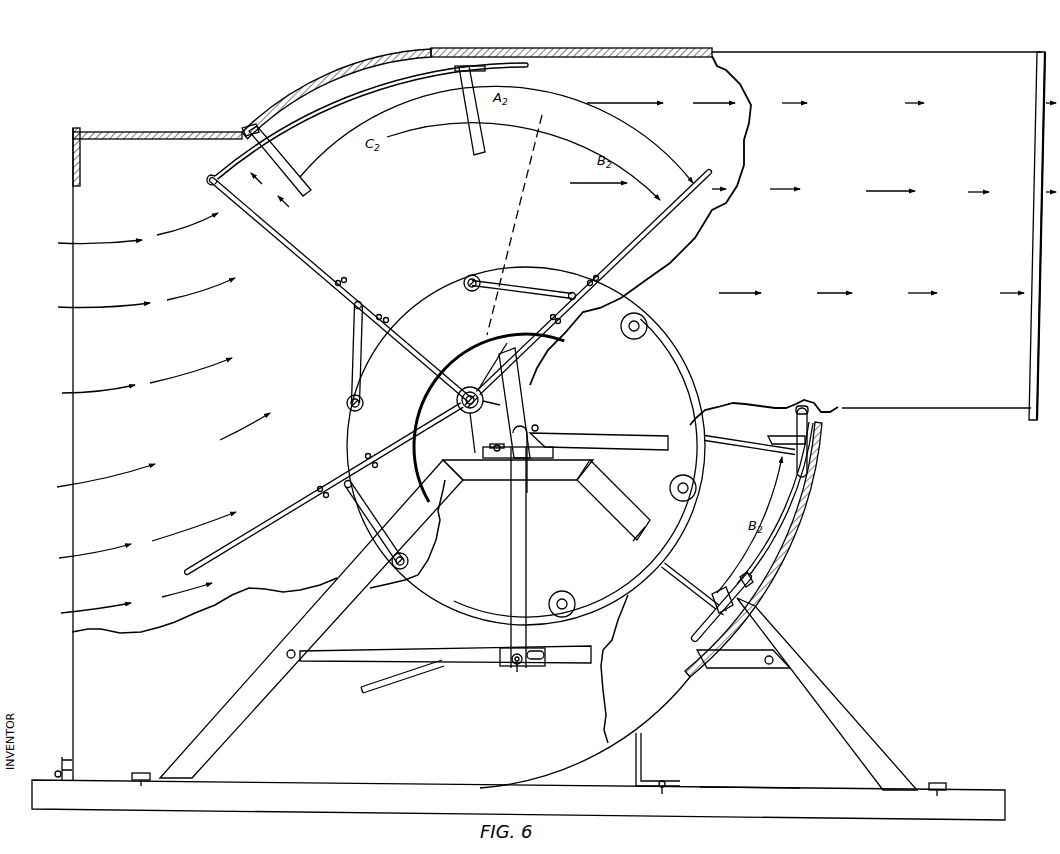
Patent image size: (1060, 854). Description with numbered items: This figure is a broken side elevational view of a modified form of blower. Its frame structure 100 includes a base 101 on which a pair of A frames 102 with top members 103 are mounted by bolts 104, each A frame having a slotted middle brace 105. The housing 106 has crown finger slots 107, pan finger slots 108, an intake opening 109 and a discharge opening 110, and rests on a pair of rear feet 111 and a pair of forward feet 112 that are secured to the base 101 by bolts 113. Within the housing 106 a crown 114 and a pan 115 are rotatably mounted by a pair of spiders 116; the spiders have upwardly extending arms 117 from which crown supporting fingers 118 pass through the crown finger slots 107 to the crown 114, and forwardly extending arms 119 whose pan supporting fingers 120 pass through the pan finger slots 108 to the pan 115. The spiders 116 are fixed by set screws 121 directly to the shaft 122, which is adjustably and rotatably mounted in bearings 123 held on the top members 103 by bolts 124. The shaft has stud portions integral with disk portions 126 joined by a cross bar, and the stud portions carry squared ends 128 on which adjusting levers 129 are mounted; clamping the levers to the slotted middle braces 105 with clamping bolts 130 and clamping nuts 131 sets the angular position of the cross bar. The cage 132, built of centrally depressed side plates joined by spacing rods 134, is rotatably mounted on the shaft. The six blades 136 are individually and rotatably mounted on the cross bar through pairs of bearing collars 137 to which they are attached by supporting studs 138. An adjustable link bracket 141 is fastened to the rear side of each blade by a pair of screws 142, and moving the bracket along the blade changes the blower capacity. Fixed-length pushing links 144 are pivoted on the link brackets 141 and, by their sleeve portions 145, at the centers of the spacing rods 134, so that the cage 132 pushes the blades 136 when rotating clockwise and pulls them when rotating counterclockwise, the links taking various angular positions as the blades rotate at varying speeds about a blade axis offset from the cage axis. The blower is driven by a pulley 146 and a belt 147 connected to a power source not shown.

The frame structure 100 is at (200, 811).
The base 101 is at (742, 786).
The A frames 102 is at (249, 678).
The top members 103 is at (470, 460).
The bolts 104 is at (148, 772).
The slotted middle brace 105 is at (352, 665).
The housing 106 is at (318, 79).
The crown finger slots 107 is at (262, 125).
The pan finger slots 108 is at (810, 447).
The intake opening 109 is at (126, 454).
The discharge opening 110 is at (990, 409).
The rear feet 111 is at (63, 757).
The forward feet 112 is at (643, 760).
The bolts 113 is at (57, 772).
The crown 114 is at (212, 176).
The pan 115 is at (798, 516).
The spiders 116 is at (522, 378).
The upwardly extending arms 117 is at (470, 147).
The crown supporting fingers 118 is at (455, 62).
The forwardly extending arms 119 is at (803, 406).
The pan supporting fingers 120 is at (808, 440).
The set screws 121 is at (539, 428).
The shaft 122 is at (529, 494).
The bearings 123 is at (490, 447).
The bolts 124 is at (556, 433).
The disk portions 126 is at (418, 473).
The squared ends 128 is at (517, 456).
The adjusting levers 129 is at (527, 560).
The clamping bolts 130 is at (504, 669).
The clamping nuts 131 is at (522, 670).
The cage 132 is at (347, 449).
The spacing rods 134 is at (464, 279).
The blades 136 is at (310, 262).
The bearing collars 137 is at (457, 402).
The supporting studs 138 is at (473, 387).
The adjustable link bracket 141 is at (354, 306).
The screws 142 is at (335, 284).
The pushing links 144 is at (351, 345).
The sleeve portions 145 is at (465, 290).
The pulley 146 is at (702, 372).
The belt 147 is at (414, 682).